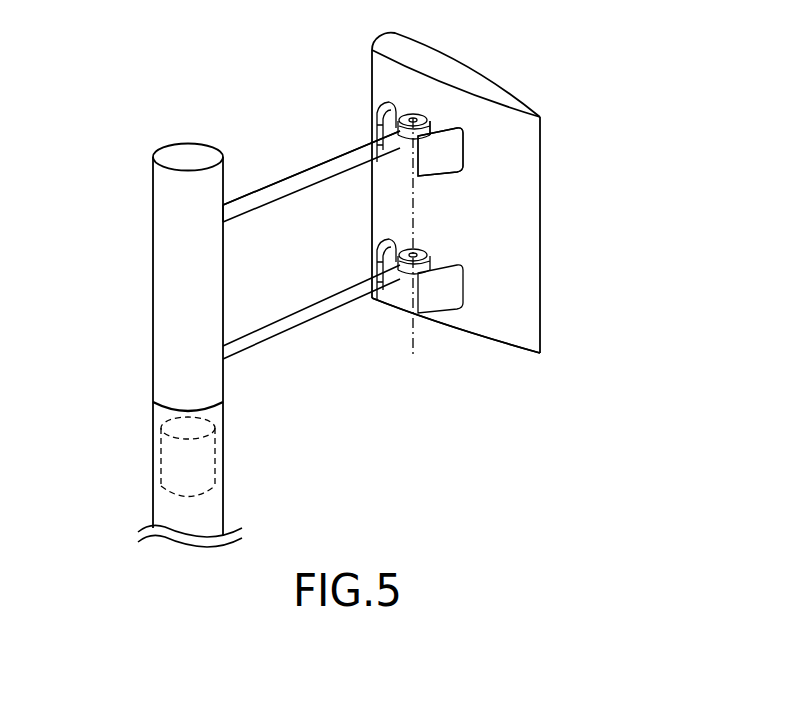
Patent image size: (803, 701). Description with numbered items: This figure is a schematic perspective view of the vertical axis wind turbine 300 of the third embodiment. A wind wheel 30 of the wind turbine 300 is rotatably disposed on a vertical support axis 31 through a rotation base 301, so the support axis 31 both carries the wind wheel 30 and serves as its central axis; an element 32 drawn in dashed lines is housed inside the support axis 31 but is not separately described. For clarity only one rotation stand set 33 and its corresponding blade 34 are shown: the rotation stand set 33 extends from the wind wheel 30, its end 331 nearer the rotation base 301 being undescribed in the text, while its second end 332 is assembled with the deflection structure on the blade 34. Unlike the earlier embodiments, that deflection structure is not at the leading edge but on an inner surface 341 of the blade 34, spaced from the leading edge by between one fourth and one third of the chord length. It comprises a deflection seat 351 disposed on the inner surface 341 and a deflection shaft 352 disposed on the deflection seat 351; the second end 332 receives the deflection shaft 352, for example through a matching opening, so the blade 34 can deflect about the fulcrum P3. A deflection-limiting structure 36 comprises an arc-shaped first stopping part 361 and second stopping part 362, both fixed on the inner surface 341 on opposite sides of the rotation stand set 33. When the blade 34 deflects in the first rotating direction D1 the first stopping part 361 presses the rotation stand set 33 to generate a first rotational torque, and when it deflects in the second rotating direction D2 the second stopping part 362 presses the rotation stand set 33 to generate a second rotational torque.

The vertical axis wind turbine 300 is at (122, 52).
The wind wheel 30 is at (241, 120).
The support axis 31 is at (214, 518).
The rotation base 301 is at (166, 252).
The motor 32 is at (167, 464).
The rotation stand set 33 is at (300, 178).
The arm end 331 is at (238, 216).
The second end of the rotation stand set 332 is at (381, 110).
The blade 34 is at (528, 242).
The inner surface of the blade 341 is at (500, 332).
The deflection seat 351 is at (432, 120).
The deflection shaft 352 is at (404, 112).
The deflection-limiting structure 36 is at (470, 156).
The first stopping part 361 is at (440, 174).
The second stopping part 362 is at (371, 124).
The fulcrum P3 is at (410, 98).
The first rotating direction D1 is at (552, 377).
The second rotating direction D2 is at (574, 313).